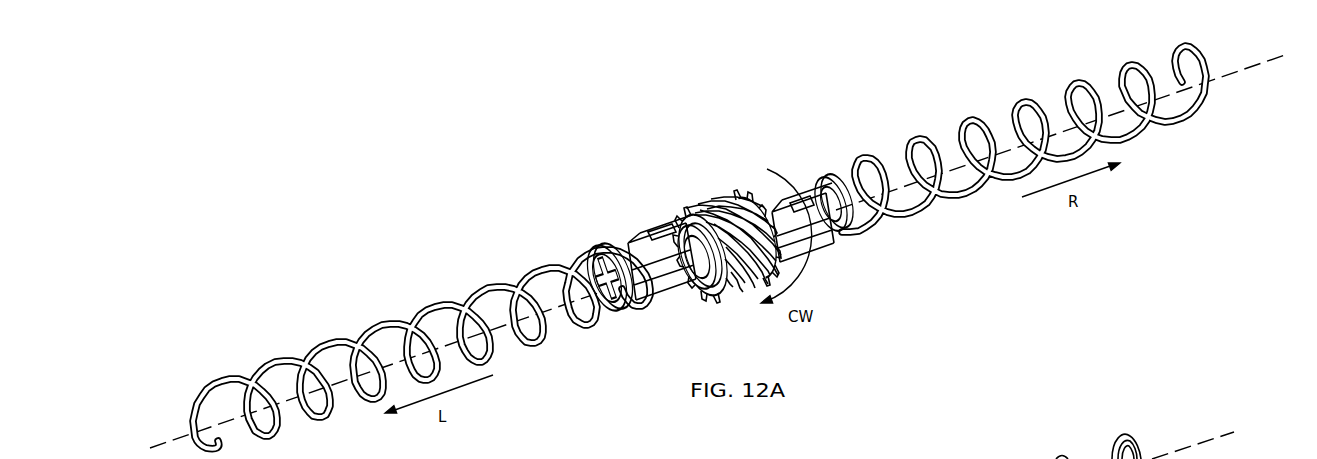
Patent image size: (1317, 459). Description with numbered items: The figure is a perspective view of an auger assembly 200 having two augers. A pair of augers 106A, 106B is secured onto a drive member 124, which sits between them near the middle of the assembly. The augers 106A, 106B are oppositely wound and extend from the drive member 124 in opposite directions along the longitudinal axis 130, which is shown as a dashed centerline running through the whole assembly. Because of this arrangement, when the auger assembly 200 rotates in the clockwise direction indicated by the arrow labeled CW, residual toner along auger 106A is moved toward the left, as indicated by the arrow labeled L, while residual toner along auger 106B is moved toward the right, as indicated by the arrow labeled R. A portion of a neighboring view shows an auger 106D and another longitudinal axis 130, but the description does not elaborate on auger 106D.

The auger assembly 200 is at (714, 213).
The drive member 124 is at (718, 198).
The auger 106A is at (390, 320).
The auger 106B is at (975, 120).
The longitudinal axis 130 is at (1263, 66).
The coil spring 106D is at (995, 458).